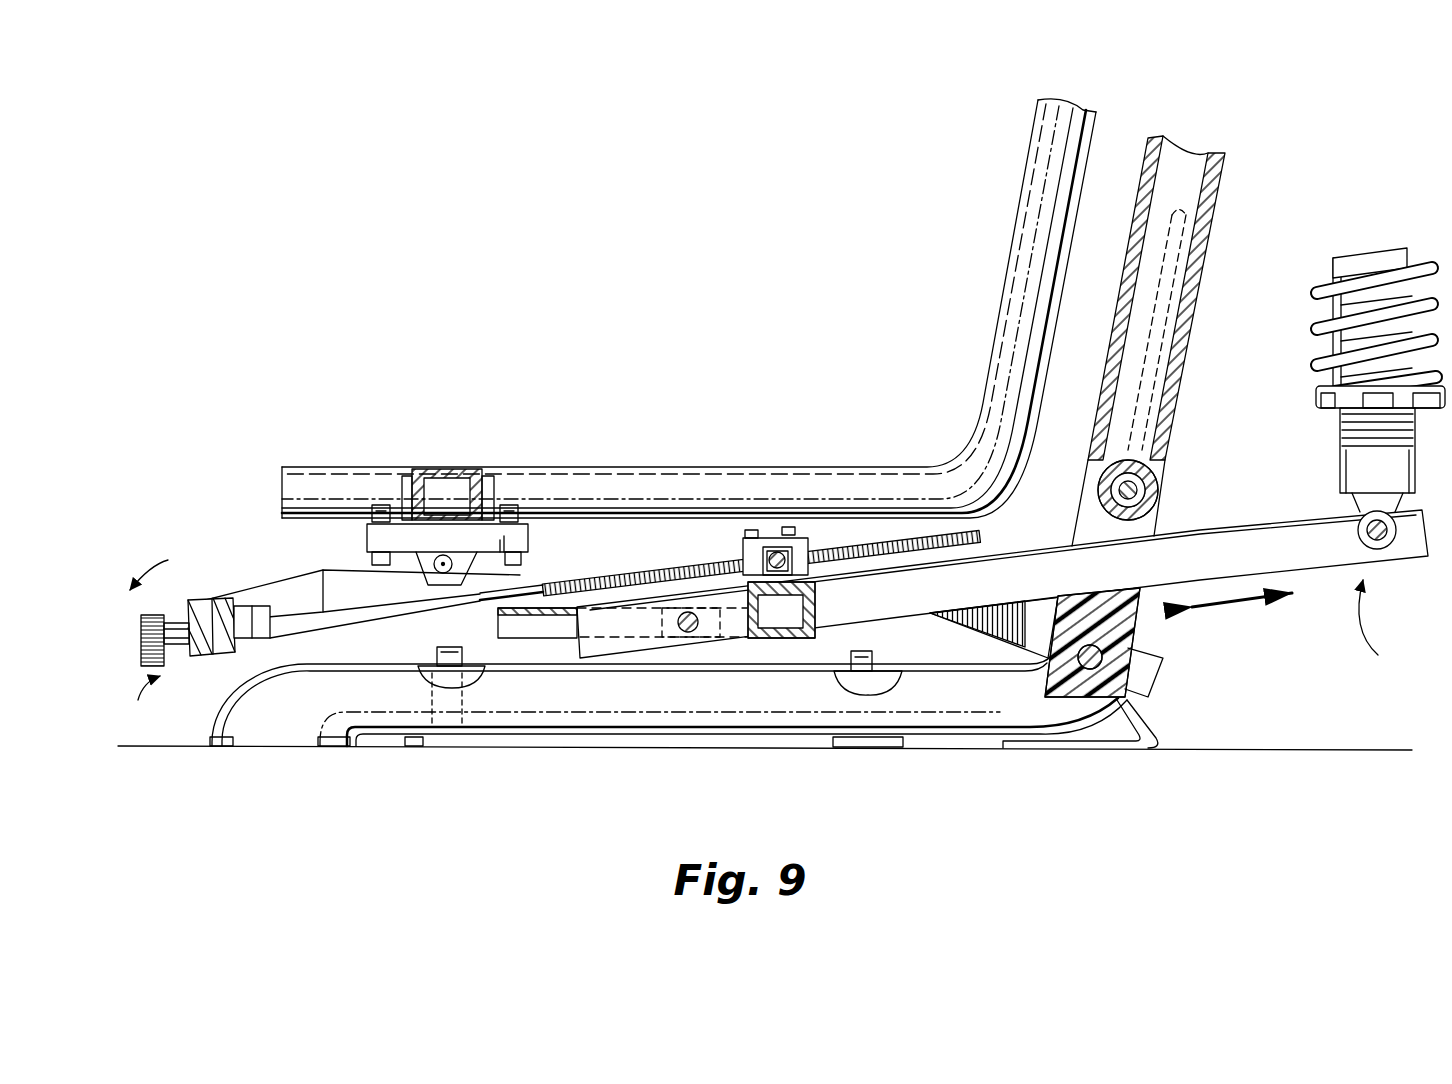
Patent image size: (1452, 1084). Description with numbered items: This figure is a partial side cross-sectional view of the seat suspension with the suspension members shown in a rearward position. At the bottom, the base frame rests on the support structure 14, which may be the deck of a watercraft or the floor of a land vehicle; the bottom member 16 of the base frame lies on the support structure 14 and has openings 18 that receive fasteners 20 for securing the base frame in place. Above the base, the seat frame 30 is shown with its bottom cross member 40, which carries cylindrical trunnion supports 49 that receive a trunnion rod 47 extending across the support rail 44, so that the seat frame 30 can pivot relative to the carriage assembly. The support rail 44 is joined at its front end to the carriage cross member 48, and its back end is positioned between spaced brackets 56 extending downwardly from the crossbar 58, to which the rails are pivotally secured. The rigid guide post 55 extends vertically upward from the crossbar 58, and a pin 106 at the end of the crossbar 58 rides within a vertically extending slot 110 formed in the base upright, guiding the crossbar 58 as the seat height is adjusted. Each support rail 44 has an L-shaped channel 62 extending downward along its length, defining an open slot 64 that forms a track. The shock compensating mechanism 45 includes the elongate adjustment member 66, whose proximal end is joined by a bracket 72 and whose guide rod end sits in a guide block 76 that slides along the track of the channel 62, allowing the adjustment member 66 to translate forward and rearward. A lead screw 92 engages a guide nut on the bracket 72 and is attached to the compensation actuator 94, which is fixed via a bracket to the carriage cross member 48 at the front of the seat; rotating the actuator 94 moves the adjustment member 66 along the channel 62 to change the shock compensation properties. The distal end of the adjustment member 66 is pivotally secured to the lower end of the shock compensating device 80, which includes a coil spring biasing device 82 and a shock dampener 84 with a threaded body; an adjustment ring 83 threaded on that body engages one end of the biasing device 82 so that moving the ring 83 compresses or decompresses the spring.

The support structure 14 is at (1306, 746).
The bottom member 16 is at (297, 703).
The opening 18 is at (440, 690).
The fastener 20 is at (875, 661).
The seat frame 30 is at (678, 490).
The bottom cross member 40 is at (446, 469).
The support rail 44 is at (244, 598).
The shock compensating mechanism 45 is at (1385, 593).
The trunnion rod 47 is at (435, 571).
The carriage cross member 48 is at (212, 662).
The trunnion support 49 is at (372, 537).
The guide post 55 is at (1234, 160).
The bracket 56 is at (1093, 683).
The crossbar 58 is at (1168, 502).
The channel 62 is at (548, 622).
The slot 64 is at (517, 640).
The adjustment member 66 is at (1002, 577).
The bracket 72 is at (818, 538).
The guide block 76 is at (712, 632).
The shock compensating device 80 is at (1425, 250).
The biasing device 82 is at (1320, 333).
The adjustment ring 83 is at (1325, 409).
The shock dampener 84 is at (1335, 270).
The lead screw 92 is at (520, 590).
The compensation actuator 94 is at (190, 600).
The pin 106 is at (1164, 458).
The slot 110 is at (1183, 243).